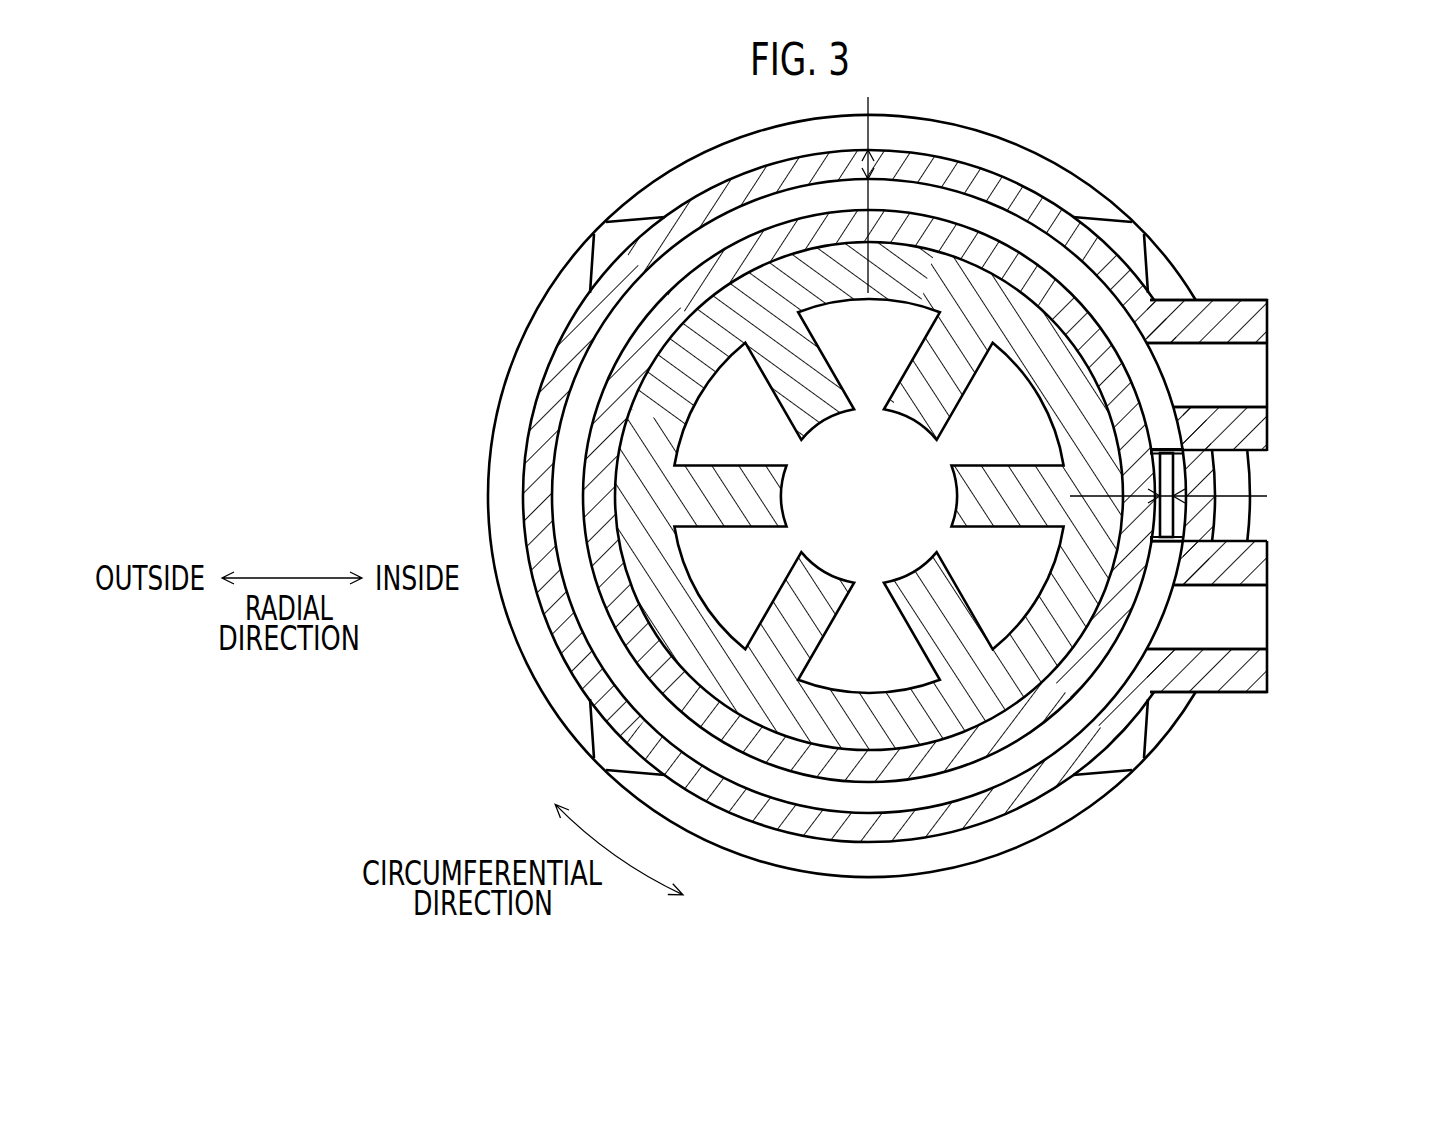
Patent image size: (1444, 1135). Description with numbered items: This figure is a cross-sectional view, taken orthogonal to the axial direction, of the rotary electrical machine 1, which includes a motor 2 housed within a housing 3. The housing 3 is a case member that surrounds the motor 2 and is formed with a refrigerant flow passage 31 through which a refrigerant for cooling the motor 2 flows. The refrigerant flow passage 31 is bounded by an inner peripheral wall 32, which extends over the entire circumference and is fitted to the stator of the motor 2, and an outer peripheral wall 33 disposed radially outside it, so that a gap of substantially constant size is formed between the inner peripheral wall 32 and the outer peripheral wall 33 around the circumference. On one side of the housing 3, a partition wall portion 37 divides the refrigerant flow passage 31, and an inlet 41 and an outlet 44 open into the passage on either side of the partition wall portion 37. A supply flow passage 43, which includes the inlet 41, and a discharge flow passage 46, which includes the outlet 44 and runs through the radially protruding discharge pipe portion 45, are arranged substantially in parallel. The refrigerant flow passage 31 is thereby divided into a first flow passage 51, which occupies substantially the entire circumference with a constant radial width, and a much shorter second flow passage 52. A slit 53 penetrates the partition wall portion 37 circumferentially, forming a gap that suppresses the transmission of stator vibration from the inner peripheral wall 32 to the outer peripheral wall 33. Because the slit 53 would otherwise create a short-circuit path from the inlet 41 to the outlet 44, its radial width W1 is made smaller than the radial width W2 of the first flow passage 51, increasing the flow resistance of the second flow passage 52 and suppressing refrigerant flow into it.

The rotary electrical machine 1 is at (457, 222).
The motor 2 is at (1106, 312).
The housing 3 is at (606, 193).
The refrigerant flow passage 31 is at (590, 636).
The inner peripheral wall 32 is at (945, 757).
The outer peripheral wall 33 is at (1040, 790).
The partition wall portion 37 is at (1190, 542).
The inlet 41 is at (1095, 628).
The supply flow passage 43 is at (1185, 628).
The outlet 44 is at (1100, 358).
The discharge pipe portion 45 is at (1262, 437).
The discharge flow passage 46 is at (1240, 362).
The first flow passage 51 is at (878, 800).
The second flow passage 52 is at (1175, 568).
The slit 53 is at (1175, 441).
The width of the slit W1 is at (1150, 500).
The width of the first flow passage W2 is at (860, 197).